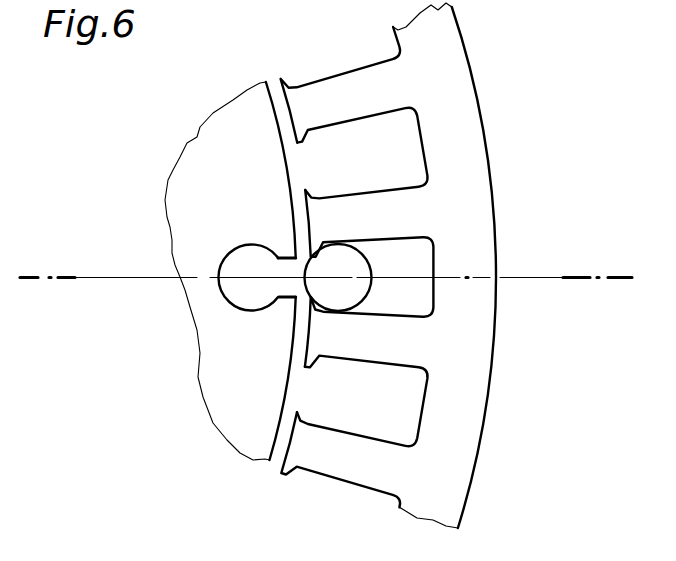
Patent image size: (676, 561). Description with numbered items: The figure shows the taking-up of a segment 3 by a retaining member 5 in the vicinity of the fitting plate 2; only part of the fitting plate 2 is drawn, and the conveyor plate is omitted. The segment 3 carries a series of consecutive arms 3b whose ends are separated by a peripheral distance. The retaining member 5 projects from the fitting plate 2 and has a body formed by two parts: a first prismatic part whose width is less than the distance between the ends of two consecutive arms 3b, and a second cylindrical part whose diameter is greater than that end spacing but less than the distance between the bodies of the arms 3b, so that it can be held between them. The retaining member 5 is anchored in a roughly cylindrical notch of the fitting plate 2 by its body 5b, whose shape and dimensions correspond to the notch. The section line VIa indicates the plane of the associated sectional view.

The fitting plate 2 is at (218, 135).
The segment 3 is at (440, 55).
The arms of the segment 3b is at (367, 207).
The retaining member 5 is at (218, 243).
The body of the retaining member 5b is at (255, 297).
The section line VIa- VIa is at (620, 335).